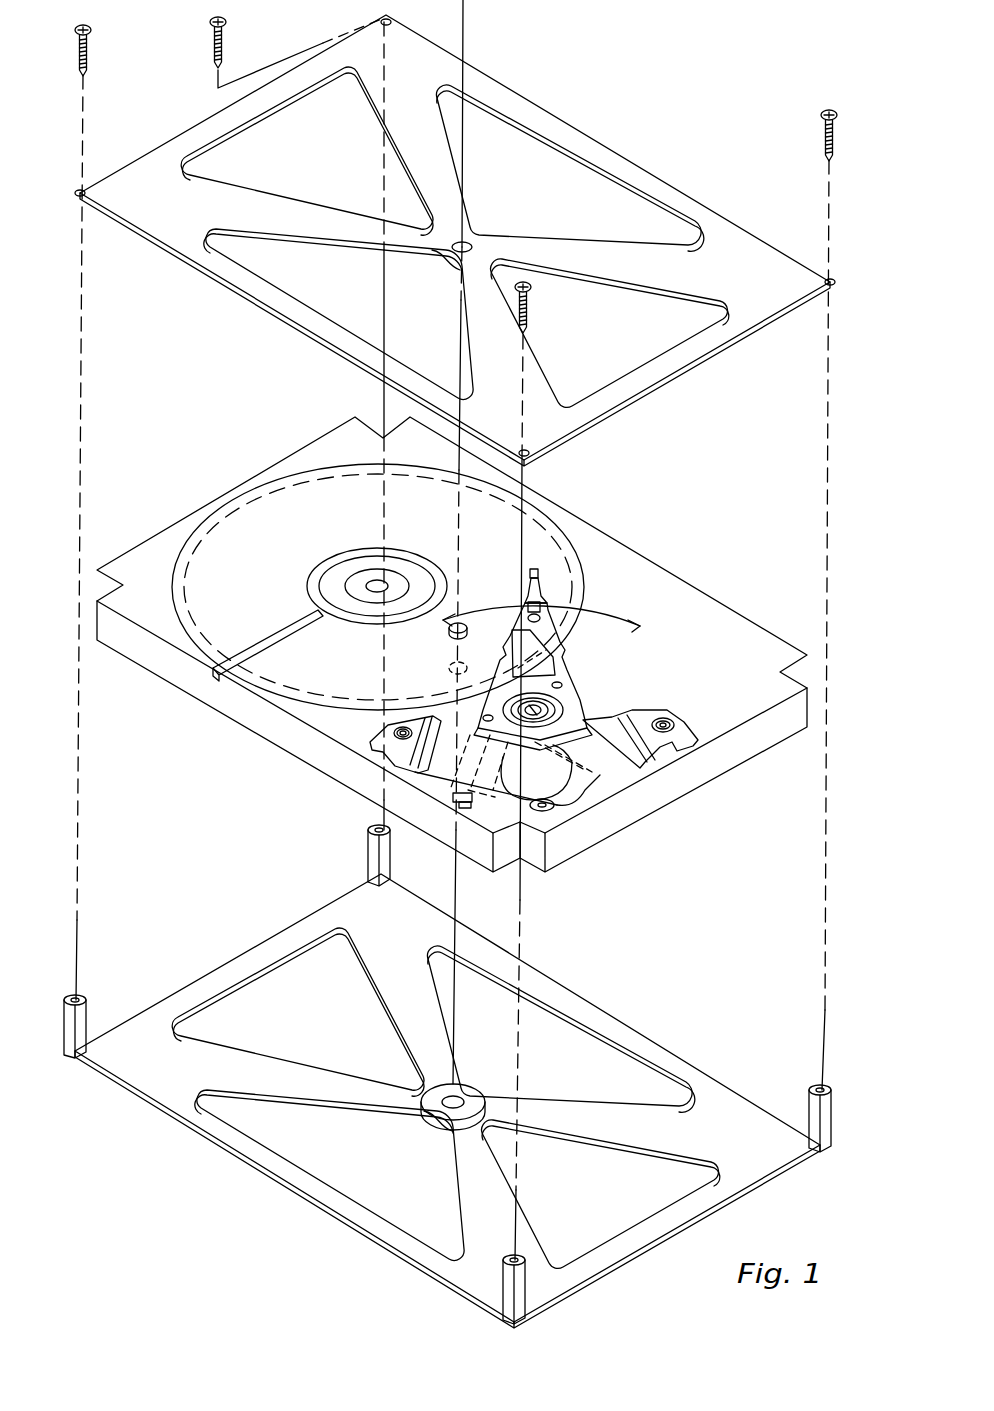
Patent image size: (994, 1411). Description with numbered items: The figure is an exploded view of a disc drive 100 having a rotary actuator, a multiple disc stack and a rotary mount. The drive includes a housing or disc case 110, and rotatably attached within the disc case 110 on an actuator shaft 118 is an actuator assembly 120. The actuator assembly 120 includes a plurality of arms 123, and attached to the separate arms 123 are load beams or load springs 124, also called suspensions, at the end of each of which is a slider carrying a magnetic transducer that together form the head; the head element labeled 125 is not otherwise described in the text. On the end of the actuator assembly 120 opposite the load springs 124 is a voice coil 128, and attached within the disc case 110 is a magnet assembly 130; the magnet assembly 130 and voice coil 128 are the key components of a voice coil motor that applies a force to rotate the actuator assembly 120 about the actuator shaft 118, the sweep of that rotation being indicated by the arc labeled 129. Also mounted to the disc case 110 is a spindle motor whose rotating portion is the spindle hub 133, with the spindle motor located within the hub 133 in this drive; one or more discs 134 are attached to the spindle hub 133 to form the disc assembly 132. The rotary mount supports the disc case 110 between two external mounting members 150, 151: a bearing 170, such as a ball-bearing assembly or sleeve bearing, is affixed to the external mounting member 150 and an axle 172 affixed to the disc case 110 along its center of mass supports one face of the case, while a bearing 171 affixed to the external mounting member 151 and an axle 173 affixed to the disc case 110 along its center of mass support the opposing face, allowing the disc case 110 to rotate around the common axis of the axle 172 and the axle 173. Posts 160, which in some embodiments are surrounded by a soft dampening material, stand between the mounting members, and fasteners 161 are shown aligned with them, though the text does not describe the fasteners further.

The disc drive 100 is at (786, 66).
The disc case 110 is at (288, 757).
The actuator shaft 118 is at (673, 747).
The actuator assembly 120 is at (582, 687).
The arms 123 is at (568, 642).
The load springs 124 is at (531, 581).
The read/write head 125 is at (541, 571).
The voice coil 128 is at (593, 793).
The arc of actuator travel 129 is at (641, 625).
The magnet assembly 130 is at (636, 773).
The disc assembly 132 is at (212, 527).
The spindle hub 133 is at (356, 565).
The discs 134 is at (183, 543).
The external mounting member 150 is at (228, 970).
The external mounting member 151 is at (248, 305).
The posts 160 is at (368, 852).
The screw 161 is at (215, 42).
The bearing 170 is at (470, 1090).
The bearing 171 is at (437, 270).
The axle 172 is at (447, 671).
The axle 173 is at (449, 628).